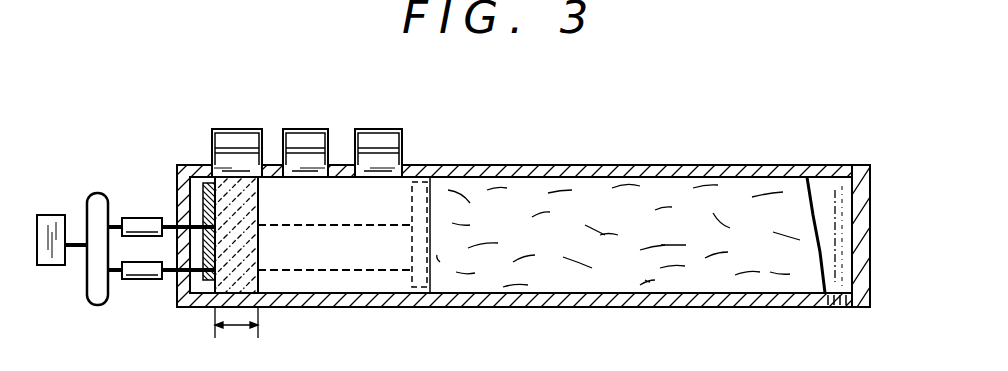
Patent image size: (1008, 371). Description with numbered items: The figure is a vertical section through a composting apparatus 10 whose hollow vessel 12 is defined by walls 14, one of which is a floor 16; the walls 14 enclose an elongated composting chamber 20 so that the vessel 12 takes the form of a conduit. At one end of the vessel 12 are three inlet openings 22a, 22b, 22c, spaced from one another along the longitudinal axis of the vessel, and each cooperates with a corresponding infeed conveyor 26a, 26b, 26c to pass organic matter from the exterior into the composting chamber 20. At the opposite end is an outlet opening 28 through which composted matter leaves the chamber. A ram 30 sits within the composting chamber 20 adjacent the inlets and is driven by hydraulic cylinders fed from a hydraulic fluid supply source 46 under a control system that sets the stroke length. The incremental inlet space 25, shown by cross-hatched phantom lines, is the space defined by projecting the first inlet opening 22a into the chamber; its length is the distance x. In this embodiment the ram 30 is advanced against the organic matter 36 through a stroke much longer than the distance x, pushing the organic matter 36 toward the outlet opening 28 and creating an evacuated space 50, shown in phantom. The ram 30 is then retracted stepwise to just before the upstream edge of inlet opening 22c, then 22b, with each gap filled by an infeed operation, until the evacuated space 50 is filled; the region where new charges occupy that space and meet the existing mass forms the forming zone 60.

The composting apparatus 10 is at (735, 165).
The hollow vessel 12 is at (813, 172).
The walls 14 is at (645, 165).
The floor 16 is at (721, 293).
The composting chamber 20 is at (817, 215).
The inlet opening 22a is at (217, 170).
The inlet opening 22b is at (332, 168).
The inlet opening 22c is at (397, 197).
The incremental inlet space 25 is at (214, 286).
The infeed conveyor 26a is at (218, 129).
The infeed conveyor 26b is at (303, 129).
The infeed conveyor 26c is at (387, 129).
The outlet opening 28 is at (840, 307).
The ram 30 is at (205, 192).
The organic matter 36 is at (615, 235).
The hydraulic fluid supply source 46 is at (86, 205).
The evacuated space 50 is at (352, 258).
The forming zone 60 is at (420, 170).